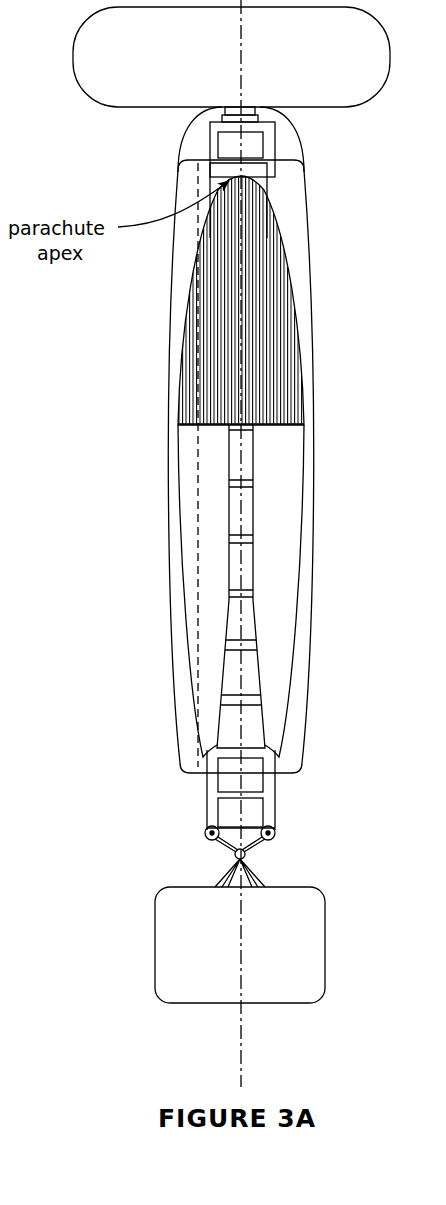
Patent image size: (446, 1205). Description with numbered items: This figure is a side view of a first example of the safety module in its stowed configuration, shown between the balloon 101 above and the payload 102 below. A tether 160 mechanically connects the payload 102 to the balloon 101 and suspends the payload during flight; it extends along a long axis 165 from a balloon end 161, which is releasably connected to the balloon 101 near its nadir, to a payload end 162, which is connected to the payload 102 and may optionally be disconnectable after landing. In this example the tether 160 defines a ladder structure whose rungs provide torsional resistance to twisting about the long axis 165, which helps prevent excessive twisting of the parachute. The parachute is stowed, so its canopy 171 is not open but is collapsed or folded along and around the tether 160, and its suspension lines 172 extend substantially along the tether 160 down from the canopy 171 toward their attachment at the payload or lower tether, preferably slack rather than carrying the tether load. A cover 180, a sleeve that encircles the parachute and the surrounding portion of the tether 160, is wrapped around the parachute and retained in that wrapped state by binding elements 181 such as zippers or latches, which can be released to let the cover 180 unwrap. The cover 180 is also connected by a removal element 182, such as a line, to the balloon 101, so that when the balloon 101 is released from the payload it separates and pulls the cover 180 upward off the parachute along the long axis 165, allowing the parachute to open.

The balloon 101 is at (328, 68).
The payload 102 is at (303, 955).
The tether 160 is at (195, 801).
The balloon end 161 is at (272, 116).
The payload end 162 is at (260, 857).
The long axis 165 is at (262, 1042).
The canopy 171 is at (277, 275).
The suspension lines 172 is at (192, 478).
The cover 180 is at (288, 200).
The binding elements 181 is at (188, 536).
The removal element 182 is at (182, 132).